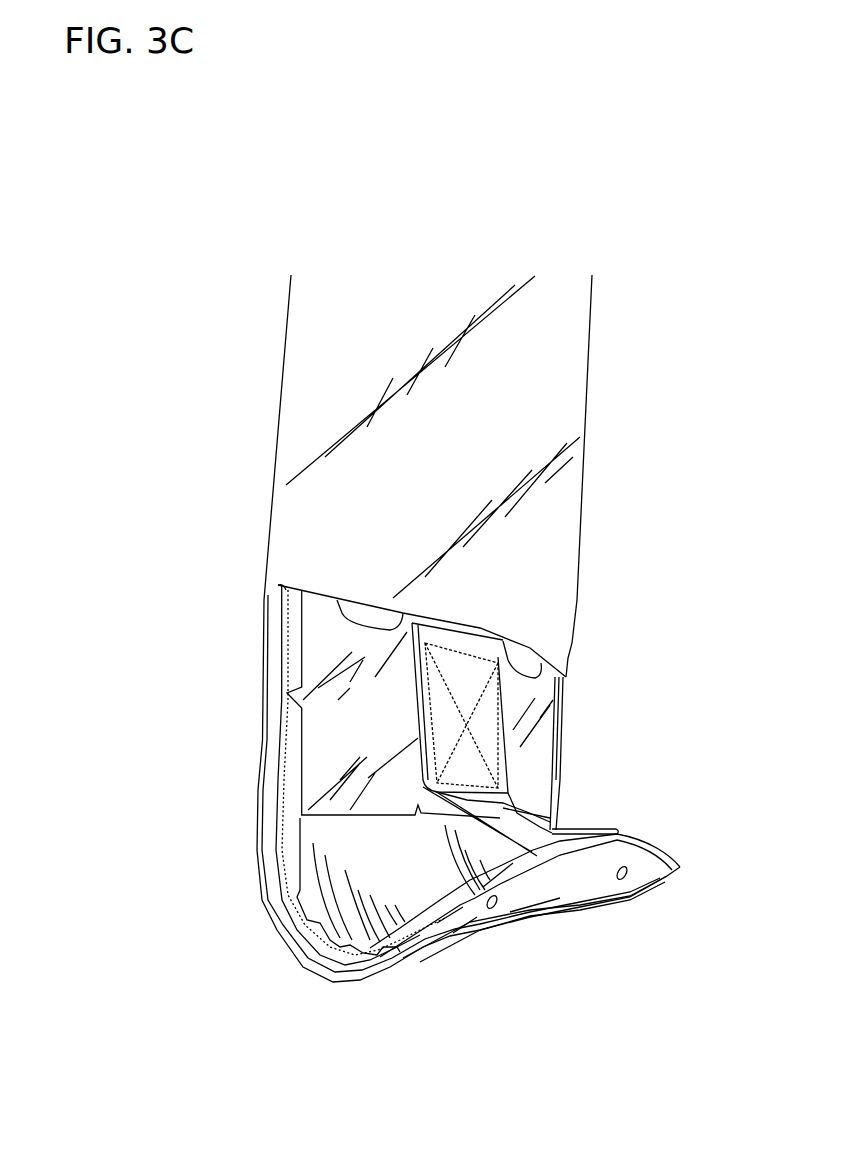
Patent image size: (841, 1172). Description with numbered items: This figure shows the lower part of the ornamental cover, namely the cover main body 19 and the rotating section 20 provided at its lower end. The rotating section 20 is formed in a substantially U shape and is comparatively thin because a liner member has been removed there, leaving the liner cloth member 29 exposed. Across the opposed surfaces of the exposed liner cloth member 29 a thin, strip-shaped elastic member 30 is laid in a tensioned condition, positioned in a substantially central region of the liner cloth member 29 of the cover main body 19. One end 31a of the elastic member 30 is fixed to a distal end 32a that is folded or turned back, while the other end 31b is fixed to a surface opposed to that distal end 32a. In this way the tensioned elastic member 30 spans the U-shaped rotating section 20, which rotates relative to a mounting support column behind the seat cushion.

The cover main body 19 is at (565, 389).
The rotating section 20 is at (570, 727).
The liner cloth member 29 is at (318, 758).
The elastic member 30 is at (500, 803).
The one end 31a is at (597, 825).
The other end 31b is at (493, 697).
The distal end 32a is at (572, 867).